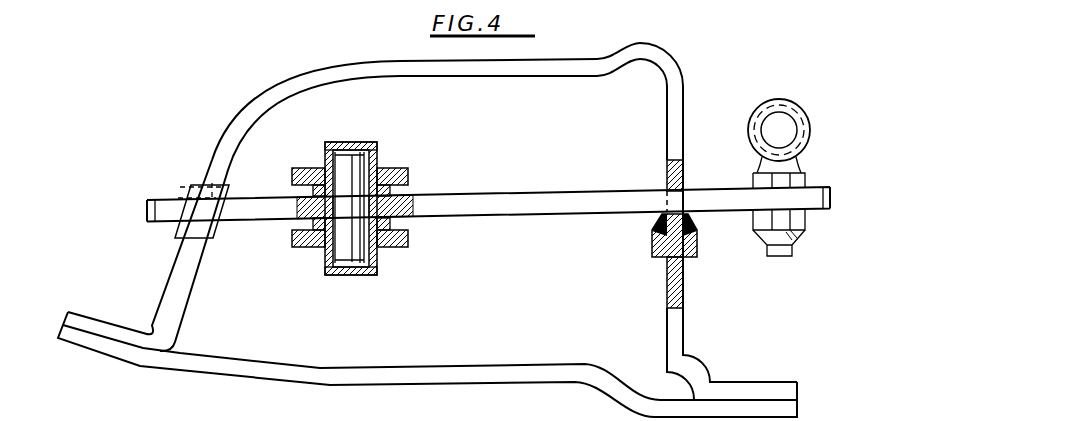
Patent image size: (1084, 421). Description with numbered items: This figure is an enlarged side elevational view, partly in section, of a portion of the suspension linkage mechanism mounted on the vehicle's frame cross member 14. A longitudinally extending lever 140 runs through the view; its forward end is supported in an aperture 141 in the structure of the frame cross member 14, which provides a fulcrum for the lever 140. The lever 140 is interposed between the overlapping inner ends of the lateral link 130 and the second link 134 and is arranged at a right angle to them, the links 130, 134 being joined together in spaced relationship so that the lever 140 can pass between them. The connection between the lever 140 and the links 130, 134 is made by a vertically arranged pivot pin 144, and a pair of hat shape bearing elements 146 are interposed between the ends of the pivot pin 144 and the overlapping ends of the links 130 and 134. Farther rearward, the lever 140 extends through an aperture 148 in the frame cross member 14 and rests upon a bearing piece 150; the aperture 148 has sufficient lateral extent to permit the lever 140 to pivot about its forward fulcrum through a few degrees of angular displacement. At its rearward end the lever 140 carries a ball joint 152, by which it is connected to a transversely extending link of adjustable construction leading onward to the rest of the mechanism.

The frame cross member 14 is at (388, 378).
The link 130 is at (410, 173).
The second link 134 is at (408, 243).
The longitudinally extending lever 140 is at (532, 197).
The aperture 141 is at (192, 184).
The pivot pin 144 is at (380, 153).
The hat shape bearing elements 146 is at (352, 143).
The aperture 148 is at (680, 186).
The bearing piece 150 is at (688, 252).
The ball joint 152 is at (797, 124).